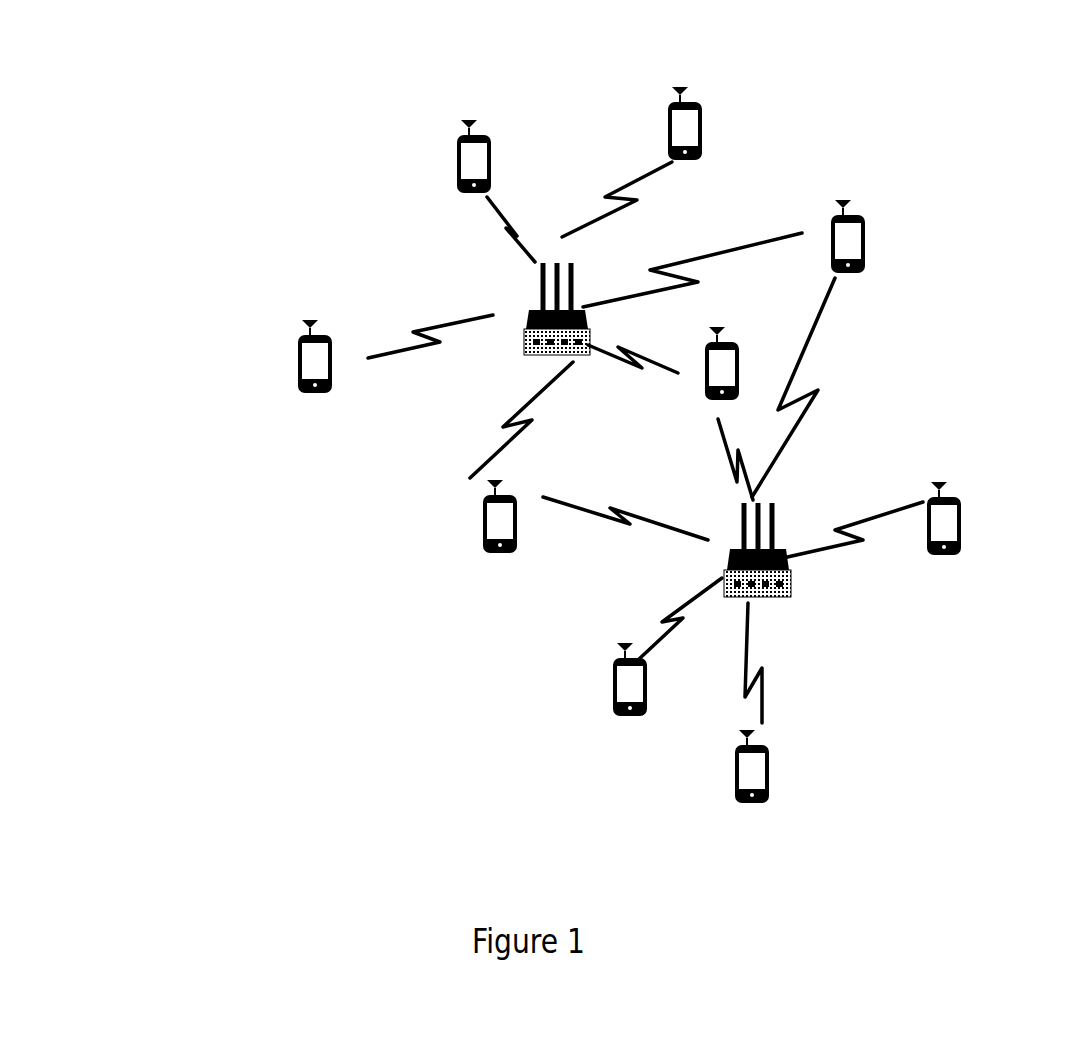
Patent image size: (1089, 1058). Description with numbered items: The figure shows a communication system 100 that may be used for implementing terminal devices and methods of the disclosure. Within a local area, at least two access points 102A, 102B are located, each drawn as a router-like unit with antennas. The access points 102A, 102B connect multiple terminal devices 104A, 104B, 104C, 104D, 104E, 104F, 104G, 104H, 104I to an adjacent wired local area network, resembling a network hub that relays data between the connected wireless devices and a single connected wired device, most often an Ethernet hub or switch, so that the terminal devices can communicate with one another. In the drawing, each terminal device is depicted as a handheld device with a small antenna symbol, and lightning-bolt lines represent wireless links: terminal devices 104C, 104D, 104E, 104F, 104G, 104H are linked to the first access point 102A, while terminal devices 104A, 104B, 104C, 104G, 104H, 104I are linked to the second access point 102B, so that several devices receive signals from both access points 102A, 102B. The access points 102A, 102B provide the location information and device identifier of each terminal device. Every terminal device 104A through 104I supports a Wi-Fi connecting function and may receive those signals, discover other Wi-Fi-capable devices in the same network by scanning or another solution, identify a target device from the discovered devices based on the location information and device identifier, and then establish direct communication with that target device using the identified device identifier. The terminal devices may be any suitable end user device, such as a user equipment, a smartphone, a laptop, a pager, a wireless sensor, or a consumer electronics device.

The communication system 100 is at (260, 83).
The access point 102A is at (528, 343).
The access point 102B is at (790, 598).
The terminal device 104A is at (735, 800).
The terminal device 104B is at (955, 558).
The terminal device 104C is at (866, 240).
The terminal device 104D is at (703, 107).
The terminal device 104E is at (455, 165).
The terminal device 104F is at (298, 395).
The terminal device 104G is at (484, 540).
The terminal device 104H is at (740, 348).
The terminal device 104I is at (612, 696).